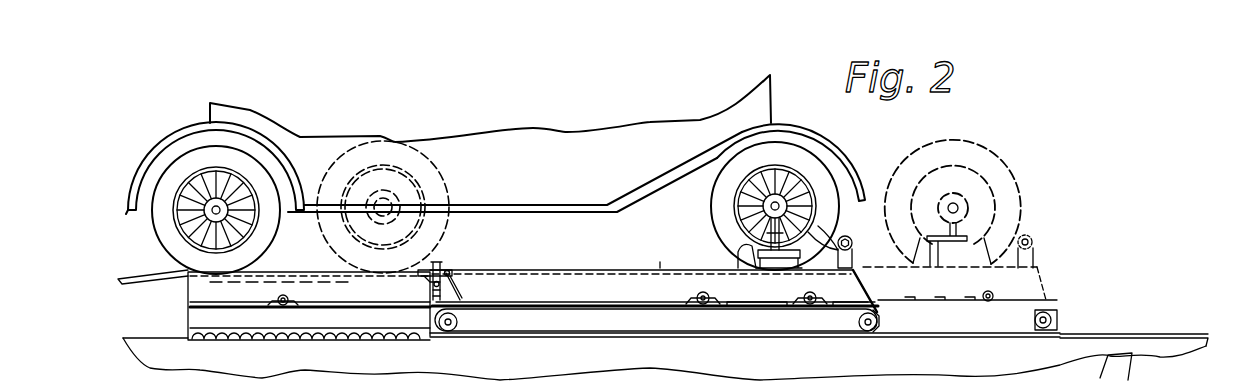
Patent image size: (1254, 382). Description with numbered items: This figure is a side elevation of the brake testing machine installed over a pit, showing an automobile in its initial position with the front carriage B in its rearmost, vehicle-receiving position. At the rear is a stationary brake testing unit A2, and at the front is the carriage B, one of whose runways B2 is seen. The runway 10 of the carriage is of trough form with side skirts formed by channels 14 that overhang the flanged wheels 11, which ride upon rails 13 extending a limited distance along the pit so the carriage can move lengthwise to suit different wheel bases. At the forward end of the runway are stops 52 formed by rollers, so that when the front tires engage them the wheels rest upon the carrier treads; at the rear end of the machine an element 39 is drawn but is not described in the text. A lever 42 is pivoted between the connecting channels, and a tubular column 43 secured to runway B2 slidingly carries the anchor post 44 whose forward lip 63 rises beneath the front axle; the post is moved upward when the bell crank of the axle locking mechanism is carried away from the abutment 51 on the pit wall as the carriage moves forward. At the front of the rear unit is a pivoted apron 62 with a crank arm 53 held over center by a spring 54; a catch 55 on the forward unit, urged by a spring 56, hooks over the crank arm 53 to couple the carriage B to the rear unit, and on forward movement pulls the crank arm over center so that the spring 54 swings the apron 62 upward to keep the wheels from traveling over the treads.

The runway 10 is at (655, 271).
The wheels 11 is at (883, 320).
The rails 13 is at (483, 334).
The channels 14 is at (581, 320).
The ramp 39 is at (135, 283).
The lever 42 is at (775, 246).
The tubular column 43 is at (738, 266).
The anchor post 44 is at (778, 260).
The abutment 51 is at (458, 274).
The stops 52 is at (853, 240).
The crank arm 53 is at (424, 277).
The spring 54 is at (434, 292).
The catch 55 is at (449, 271).
The spring 56 is at (460, 279).
The apron 62 is at (445, 266).
The forward lip 63 is at (840, 226).
The brake testing unit A2 is at (328, 317).
The runway B2 is at (699, 318).
The carriage B is at (960, 276).